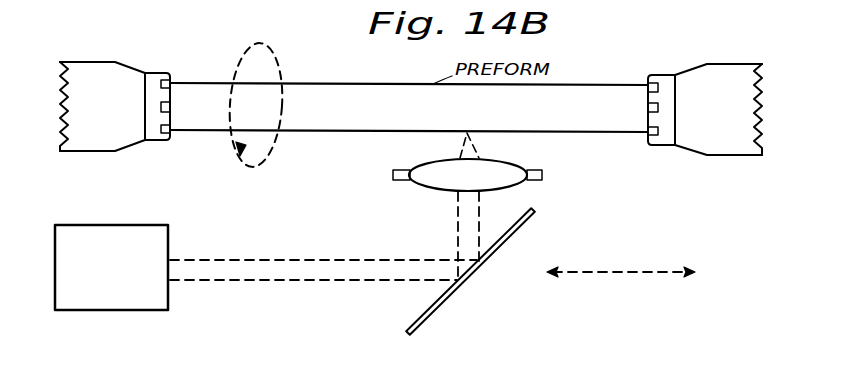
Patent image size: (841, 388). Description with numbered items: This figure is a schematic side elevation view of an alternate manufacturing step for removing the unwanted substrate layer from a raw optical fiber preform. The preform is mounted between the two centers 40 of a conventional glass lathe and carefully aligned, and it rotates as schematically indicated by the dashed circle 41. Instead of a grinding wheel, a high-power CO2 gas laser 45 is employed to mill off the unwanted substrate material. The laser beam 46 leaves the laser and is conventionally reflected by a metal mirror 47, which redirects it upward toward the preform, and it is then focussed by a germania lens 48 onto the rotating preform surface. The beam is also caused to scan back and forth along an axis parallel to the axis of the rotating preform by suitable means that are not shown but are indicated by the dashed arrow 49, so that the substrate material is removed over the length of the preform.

The centers 40 is at (131, 142).
The dashed circle 41 is at (240, 58).
The CO2 gas laser 45 is at (170, 245).
The laser beam 46 is at (251, 266).
The metal mirror 47 is at (499, 237).
The germania lens 48 is at (500, 162).
The dashed arrow 49 is at (600, 273).